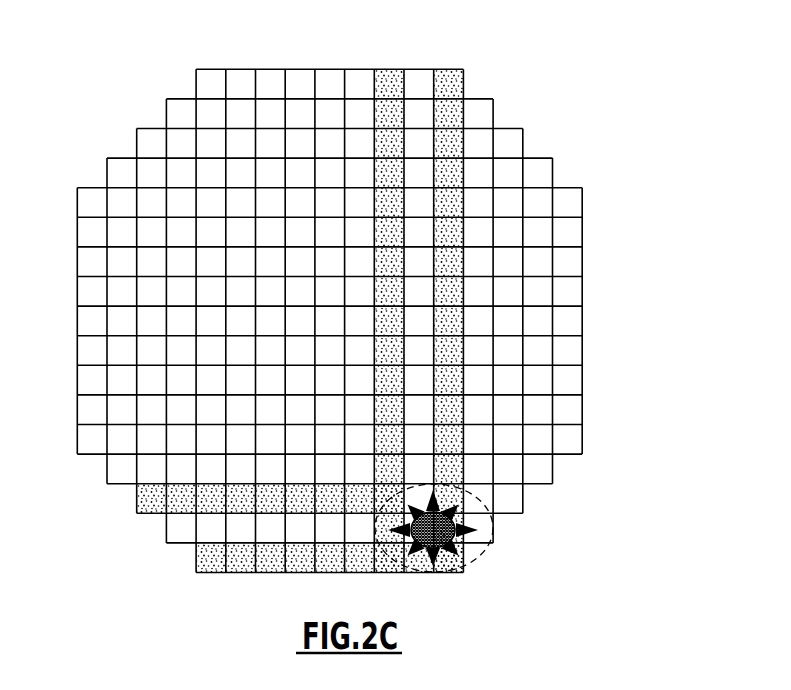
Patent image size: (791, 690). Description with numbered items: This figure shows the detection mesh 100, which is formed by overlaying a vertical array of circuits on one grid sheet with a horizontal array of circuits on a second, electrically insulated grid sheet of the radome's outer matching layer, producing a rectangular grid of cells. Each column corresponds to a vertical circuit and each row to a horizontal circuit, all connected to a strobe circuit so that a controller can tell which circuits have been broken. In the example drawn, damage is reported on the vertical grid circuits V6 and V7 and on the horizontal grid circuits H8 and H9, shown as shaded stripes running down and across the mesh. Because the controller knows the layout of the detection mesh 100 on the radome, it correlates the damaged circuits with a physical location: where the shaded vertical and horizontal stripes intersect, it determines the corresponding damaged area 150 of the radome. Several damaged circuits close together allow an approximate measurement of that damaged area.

The detection mesh 100 is at (632, 72).
The vertical grid circuit V6 is at (387, 58).
The vertical grid circuit V7 is at (448, 58).
The horizontal grid circuit H8 is at (125, 498).
The horizontal grid circuit H9 is at (184, 557).
The damaged area 150 is at (510, 528).